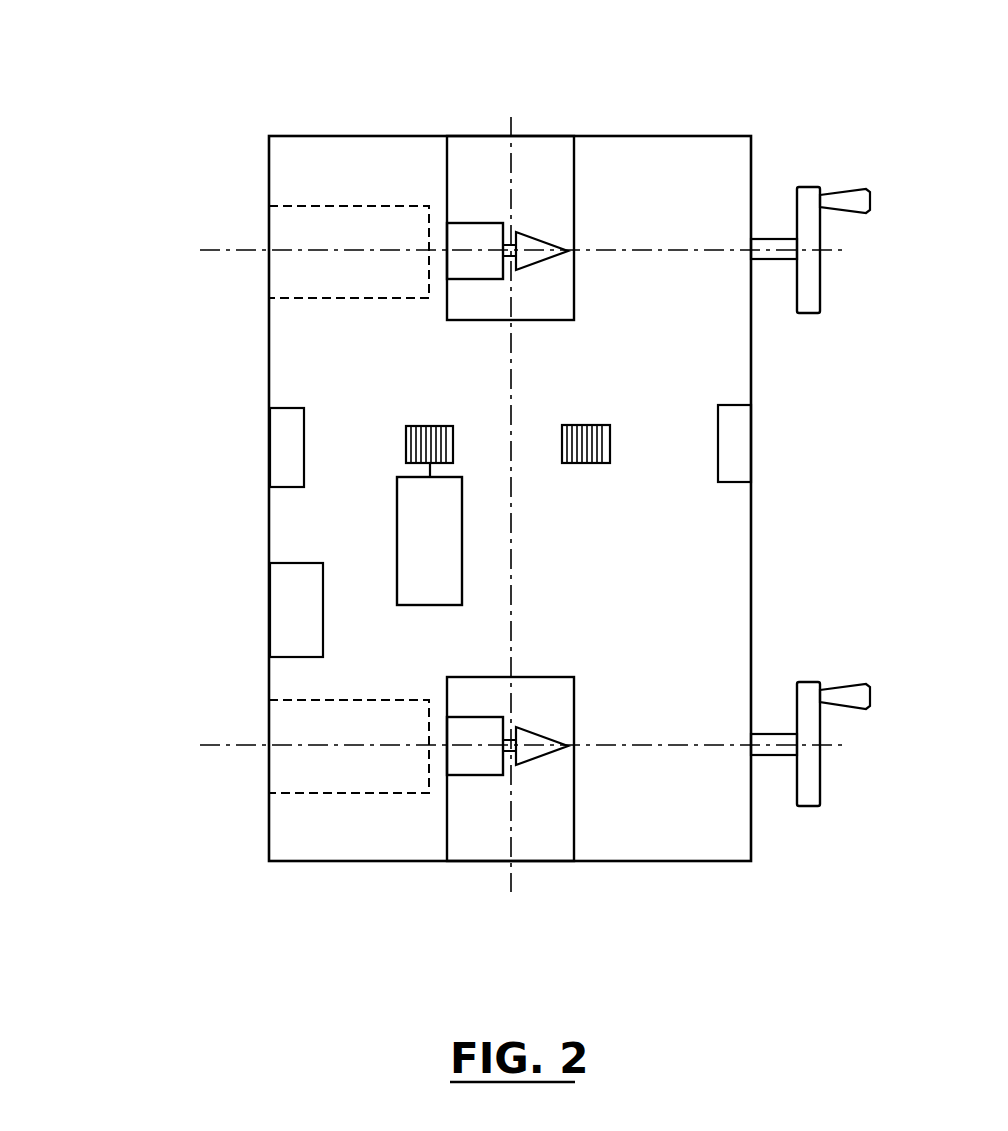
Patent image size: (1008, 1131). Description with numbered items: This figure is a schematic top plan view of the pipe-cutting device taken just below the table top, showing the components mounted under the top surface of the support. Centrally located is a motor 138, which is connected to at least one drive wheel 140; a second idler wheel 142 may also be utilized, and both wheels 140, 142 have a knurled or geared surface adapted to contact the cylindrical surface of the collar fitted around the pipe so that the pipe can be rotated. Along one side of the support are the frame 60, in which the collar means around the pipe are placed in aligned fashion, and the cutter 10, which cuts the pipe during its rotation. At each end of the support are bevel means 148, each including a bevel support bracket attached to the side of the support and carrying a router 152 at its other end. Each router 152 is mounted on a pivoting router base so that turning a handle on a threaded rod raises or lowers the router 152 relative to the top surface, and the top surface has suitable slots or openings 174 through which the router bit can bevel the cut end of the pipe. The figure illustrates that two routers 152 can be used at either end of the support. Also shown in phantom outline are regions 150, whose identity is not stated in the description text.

The bevel means 148 is at (218, 210).
The spindle housing (phantom) 150 is at (300, 281).
The router 152 is at (483, 230).
The slots or openings 174 is at (575, 172).
The frame 60 is at (282, 438).
The cutter 10 is at (286, 605).
The motor 138 is at (445, 537).
The drive wheel 140 is at (429, 426).
The second idler wheel 142 is at (588, 425).